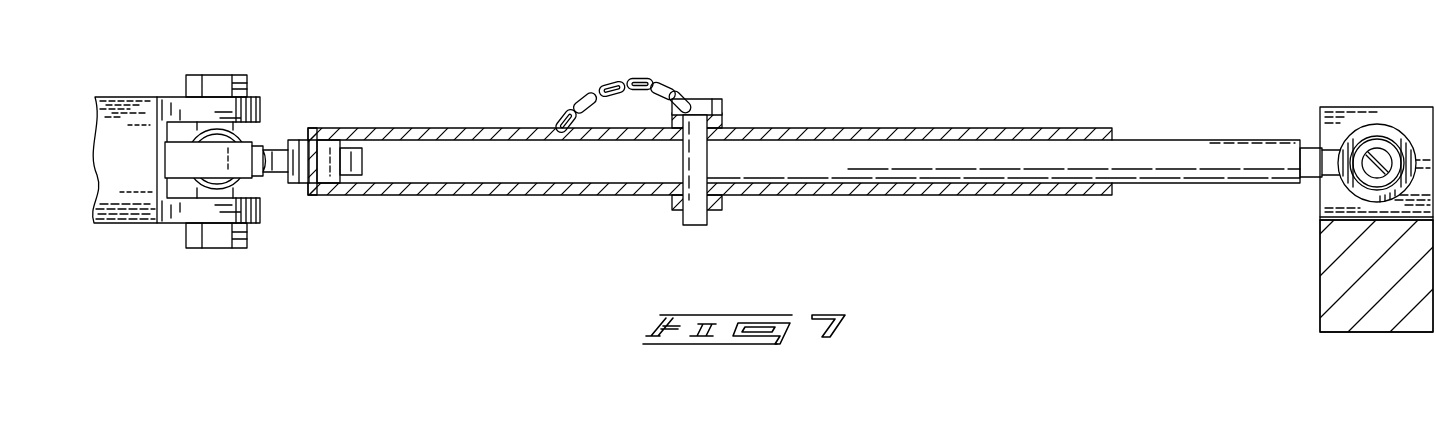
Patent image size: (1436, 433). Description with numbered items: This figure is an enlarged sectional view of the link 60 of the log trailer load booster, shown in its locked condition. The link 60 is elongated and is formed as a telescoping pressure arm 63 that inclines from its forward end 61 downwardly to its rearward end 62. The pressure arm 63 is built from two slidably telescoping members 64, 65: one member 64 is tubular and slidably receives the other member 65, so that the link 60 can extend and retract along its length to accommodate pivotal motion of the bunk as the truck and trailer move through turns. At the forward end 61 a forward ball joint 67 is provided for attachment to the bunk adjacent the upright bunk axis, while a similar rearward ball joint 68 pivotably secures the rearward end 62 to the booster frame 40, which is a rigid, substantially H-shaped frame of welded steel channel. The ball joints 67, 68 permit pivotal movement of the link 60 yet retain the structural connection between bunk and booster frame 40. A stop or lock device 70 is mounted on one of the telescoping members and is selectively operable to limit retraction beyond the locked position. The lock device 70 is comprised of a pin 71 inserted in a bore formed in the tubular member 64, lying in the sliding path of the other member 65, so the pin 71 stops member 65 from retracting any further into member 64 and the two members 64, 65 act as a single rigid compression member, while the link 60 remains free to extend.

The booster frame 40 is at (1320, 288).
The link 60 is at (918, 104).
The forward end 61 is at (322, 197).
The rearward end 62 is at (1292, 138).
The telescoping pressure arm 63 is at (1005, 129).
The tubular telescoping member 64 is at (973, 197).
The telescoping member 65 is at (1167, 150).
The forward ball joint 67 is at (241, 131).
The rearward ball joint 68 is at (1377, 128).
The lock device 70 is at (707, 94).
The pin 71 is at (695, 226).